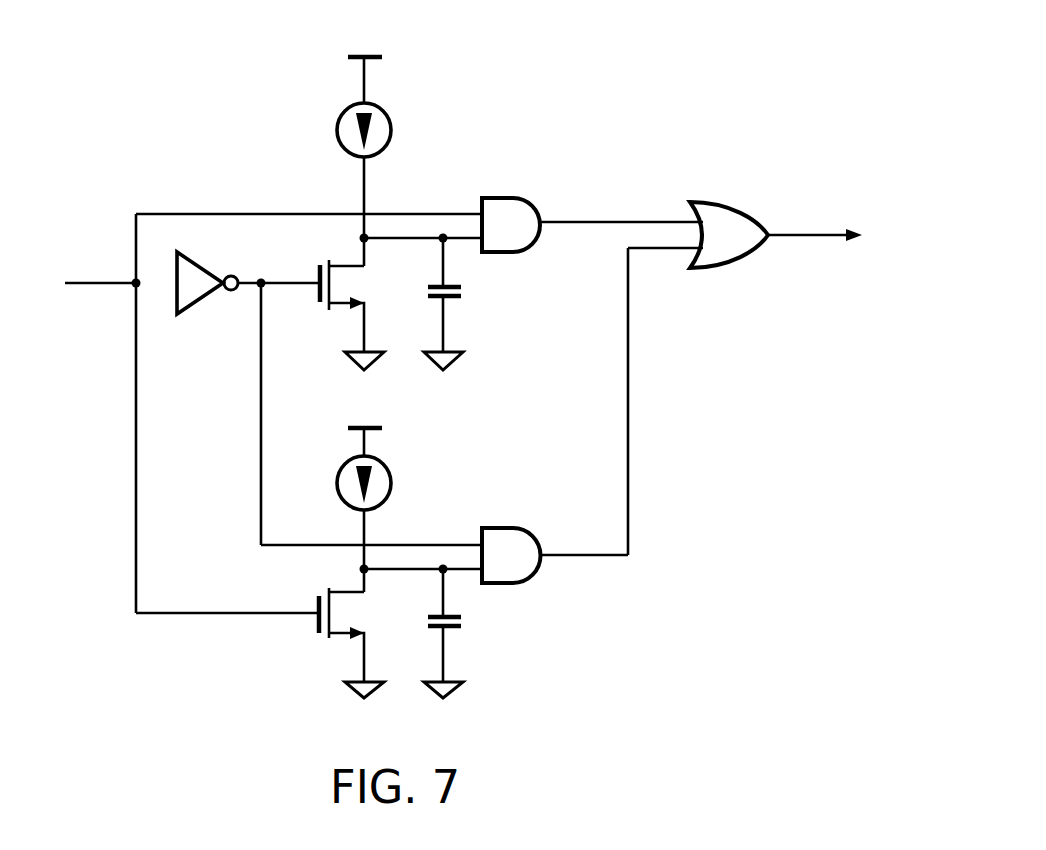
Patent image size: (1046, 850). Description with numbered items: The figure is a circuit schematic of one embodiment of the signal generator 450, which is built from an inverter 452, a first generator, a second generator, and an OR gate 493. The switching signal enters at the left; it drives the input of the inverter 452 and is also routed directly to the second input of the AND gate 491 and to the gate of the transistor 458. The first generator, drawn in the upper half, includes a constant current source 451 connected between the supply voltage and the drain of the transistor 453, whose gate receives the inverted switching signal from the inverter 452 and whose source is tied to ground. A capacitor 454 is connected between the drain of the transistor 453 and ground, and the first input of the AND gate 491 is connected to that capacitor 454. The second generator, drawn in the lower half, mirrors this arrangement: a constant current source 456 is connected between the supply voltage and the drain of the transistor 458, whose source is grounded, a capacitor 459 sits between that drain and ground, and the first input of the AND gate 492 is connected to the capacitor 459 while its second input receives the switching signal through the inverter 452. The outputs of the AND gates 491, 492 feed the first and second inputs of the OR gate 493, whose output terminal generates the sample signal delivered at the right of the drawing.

The signal generator 450 is at (870, 33).
The constant current source 451 is at (330, 133).
The inverter 452 is at (197, 315).
The transistor 453 is at (352, 255).
The capacitor 454 is at (465, 289).
The constant current source 456 is at (392, 463).
The transistor 458 is at (335, 638).
The capacitor 459 is at (461, 618).
The AND gate 491 is at (506, 195).
The AND gate 492 is at (506, 525).
The OR gate 493 is at (730, 268).